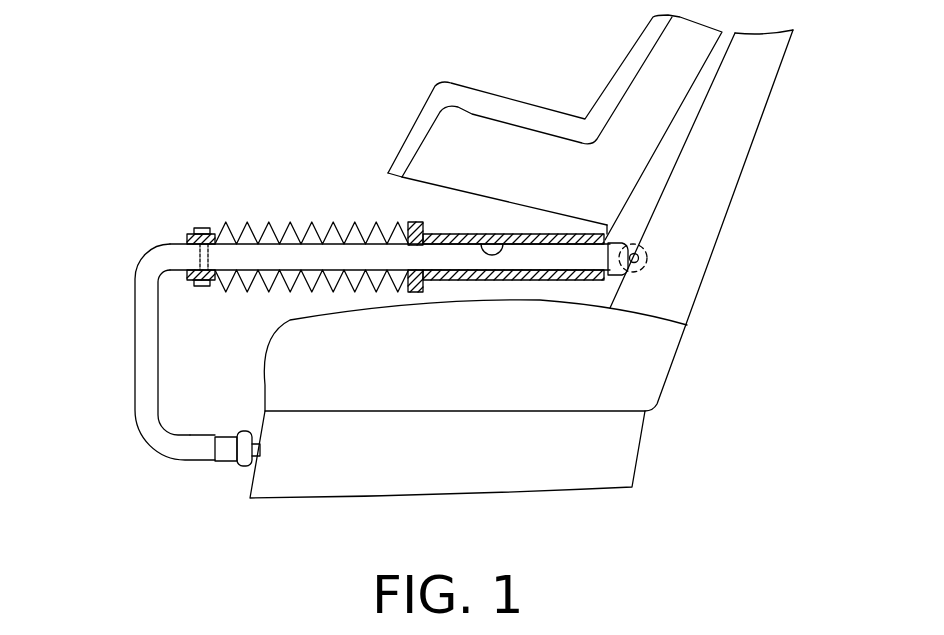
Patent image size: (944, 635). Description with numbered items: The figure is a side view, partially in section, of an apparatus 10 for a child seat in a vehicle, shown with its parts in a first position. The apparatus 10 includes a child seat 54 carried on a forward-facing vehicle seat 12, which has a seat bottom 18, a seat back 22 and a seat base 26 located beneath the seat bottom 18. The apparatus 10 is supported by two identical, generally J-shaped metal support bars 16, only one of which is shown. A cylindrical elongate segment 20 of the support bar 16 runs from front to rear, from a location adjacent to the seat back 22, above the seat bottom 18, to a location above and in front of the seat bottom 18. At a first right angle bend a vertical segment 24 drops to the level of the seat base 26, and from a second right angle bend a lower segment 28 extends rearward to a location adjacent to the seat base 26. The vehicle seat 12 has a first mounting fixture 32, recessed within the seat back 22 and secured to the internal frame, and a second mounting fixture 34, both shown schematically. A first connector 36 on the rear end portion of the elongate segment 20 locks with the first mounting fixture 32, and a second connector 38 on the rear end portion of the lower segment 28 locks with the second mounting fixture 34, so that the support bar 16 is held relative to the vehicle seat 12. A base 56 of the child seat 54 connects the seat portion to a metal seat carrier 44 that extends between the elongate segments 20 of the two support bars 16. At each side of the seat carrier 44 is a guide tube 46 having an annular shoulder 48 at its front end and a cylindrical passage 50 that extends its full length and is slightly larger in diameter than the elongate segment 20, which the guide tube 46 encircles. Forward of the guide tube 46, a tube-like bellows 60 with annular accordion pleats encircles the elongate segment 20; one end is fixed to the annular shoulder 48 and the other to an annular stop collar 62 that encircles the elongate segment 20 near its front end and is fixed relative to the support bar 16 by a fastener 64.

The apparatus 10 is at (152, 124).
The vehicle seat 12 is at (792, 116).
The support bar 16 is at (130, 308).
The vehicle seat bottom 18 is at (667, 360).
The elongate segment 20 is at (293, 254).
The vehicle seat back 22 is at (737, 163).
The vertical segment 24 is at (143, 367).
The seat base 26 is at (630, 451).
The lower segment 28 is at (183, 453).
The first mounting fixture 32 is at (646, 258).
The second mounting fixture 34 is at (247, 432).
The first connector 36 is at (627, 242).
The second connector 38 is at (233, 434).
The seat carrier 44 is at (522, 298).
The guide tube 46 is at (468, 282).
The annular shoulder 48 is at (410, 224).
The cylindrical passage 50 is at (500, 236).
The child seat 54 is at (590, 80).
The base 56 is at (460, 214).
The bellows 60 is at (272, 222).
The stop collar 62 is at (190, 239).
The fastener 64 is at (200, 228).